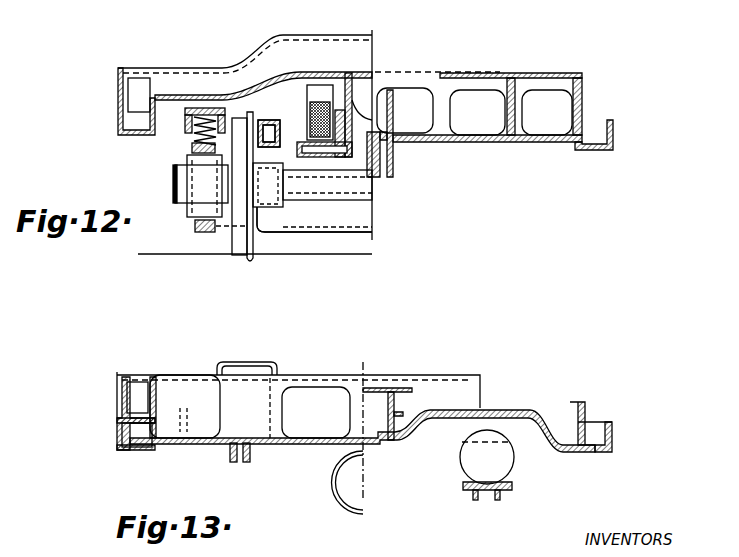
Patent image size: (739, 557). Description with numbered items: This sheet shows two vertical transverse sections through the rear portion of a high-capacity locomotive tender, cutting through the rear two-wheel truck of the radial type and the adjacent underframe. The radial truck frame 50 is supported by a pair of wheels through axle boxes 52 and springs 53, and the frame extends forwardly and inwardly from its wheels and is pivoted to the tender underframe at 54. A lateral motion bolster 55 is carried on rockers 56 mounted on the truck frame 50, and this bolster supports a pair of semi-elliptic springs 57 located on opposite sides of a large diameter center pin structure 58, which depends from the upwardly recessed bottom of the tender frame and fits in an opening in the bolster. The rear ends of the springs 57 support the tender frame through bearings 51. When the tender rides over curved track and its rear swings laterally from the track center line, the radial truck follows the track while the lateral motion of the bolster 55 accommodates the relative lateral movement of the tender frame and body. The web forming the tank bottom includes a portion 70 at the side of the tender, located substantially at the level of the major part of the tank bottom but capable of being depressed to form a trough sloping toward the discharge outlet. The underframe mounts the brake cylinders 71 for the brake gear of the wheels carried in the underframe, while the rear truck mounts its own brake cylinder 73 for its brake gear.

In FIG. 12, the radial truck frame 50 is at (225, 113).
In FIG. 12, the bearings 51 is at (332, 86).
In FIG. 12, the axle boxes 52 is at (283, 247).
In FIG. 12, the springs 53 is at (195, 140).
In FIG. 12, the pivot 54 is at (378, 182).
In FIG. 12, the lateral motion bolster 55 is at (322, 150).
In FIG. 12, the rockers 56 is at (327, 156).
In FIG. 12, the semi-elliptic springs 57 is at (318, 95).
In FIG. 12, the center pin structure 58 is at (362, 122).
In FIG. 12, the web portion 70 is at (591, 150).
In FIG. 13, the web portion 70 is at (130, 452).
In FIG. 13, the brake cylinders 71 is at (348, 480).
In FIG. 13, the brake cylinder 73 is at (487, 465).